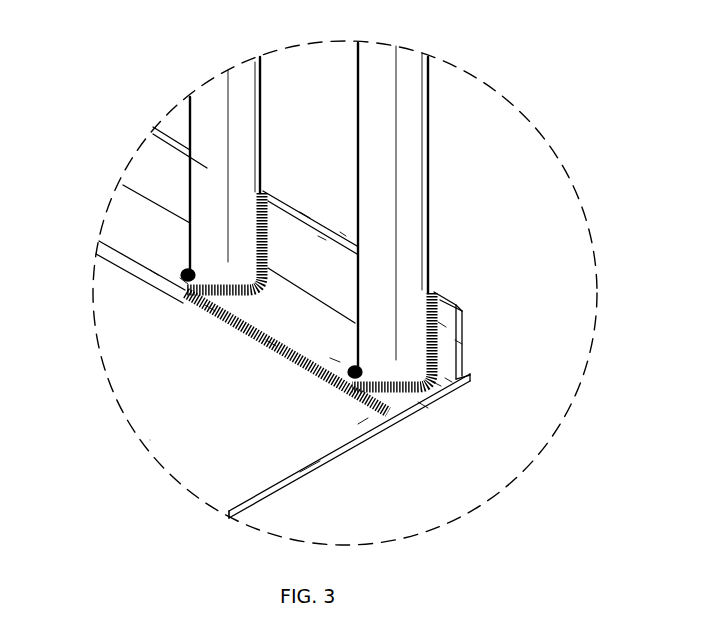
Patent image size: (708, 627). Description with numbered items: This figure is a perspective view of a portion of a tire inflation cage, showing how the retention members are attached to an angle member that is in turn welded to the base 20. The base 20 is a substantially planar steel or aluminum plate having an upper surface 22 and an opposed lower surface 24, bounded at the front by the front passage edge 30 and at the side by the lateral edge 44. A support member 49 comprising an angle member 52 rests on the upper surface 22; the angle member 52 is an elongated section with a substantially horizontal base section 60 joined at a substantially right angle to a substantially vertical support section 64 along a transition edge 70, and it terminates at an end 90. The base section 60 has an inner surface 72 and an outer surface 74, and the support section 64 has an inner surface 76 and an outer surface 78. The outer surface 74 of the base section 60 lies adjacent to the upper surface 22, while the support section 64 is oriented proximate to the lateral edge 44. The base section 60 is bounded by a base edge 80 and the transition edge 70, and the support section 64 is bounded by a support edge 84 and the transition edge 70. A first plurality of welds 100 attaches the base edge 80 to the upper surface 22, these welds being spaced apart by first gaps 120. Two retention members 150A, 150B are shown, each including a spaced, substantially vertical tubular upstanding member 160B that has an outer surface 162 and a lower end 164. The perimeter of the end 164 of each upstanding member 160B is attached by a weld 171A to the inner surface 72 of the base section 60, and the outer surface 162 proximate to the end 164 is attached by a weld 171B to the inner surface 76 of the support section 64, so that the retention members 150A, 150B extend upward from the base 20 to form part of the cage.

The base 20 is at (160, 405).
The upper surface 22 is at (232, 471).
The lower surface 24 is at (315, 473).
The front passage edge 30 is at (250, 507).
The lateral edge 44 is at (461, 378).
The support member 49 is at (462, 326).
The angle member 52 is at (443, 325).
The base section 60 is at (262, 325).
The support section 64 is at (320, 243).
The transition edge 70 is at (272, 344).
The inner surface of base section 72 is at (335, 360).
The outer surface of base section 74 is at (437, 384).
The inner surface of support section 76 is at (453, 312).
The outer surface of support section 78 is at (338, 232).
The base edge 80 is at (152, 280).
The support edge 84 is at (274, 198).
The end 90 is at (448, 380).
The first plurality of welds 100 is at (210, 310).
The first gap 120 is at (128, 267).
The retention member 150A is at (430, 112).
The retention member 150B is at (183, 128).
The upstanding member 160B is at (243, 86).
The outer surface 162 is at (192, 156).
The end 164 is at (185, 276).
The weld 171A is at (185, 270).
The weld 171B is at (262, 196).